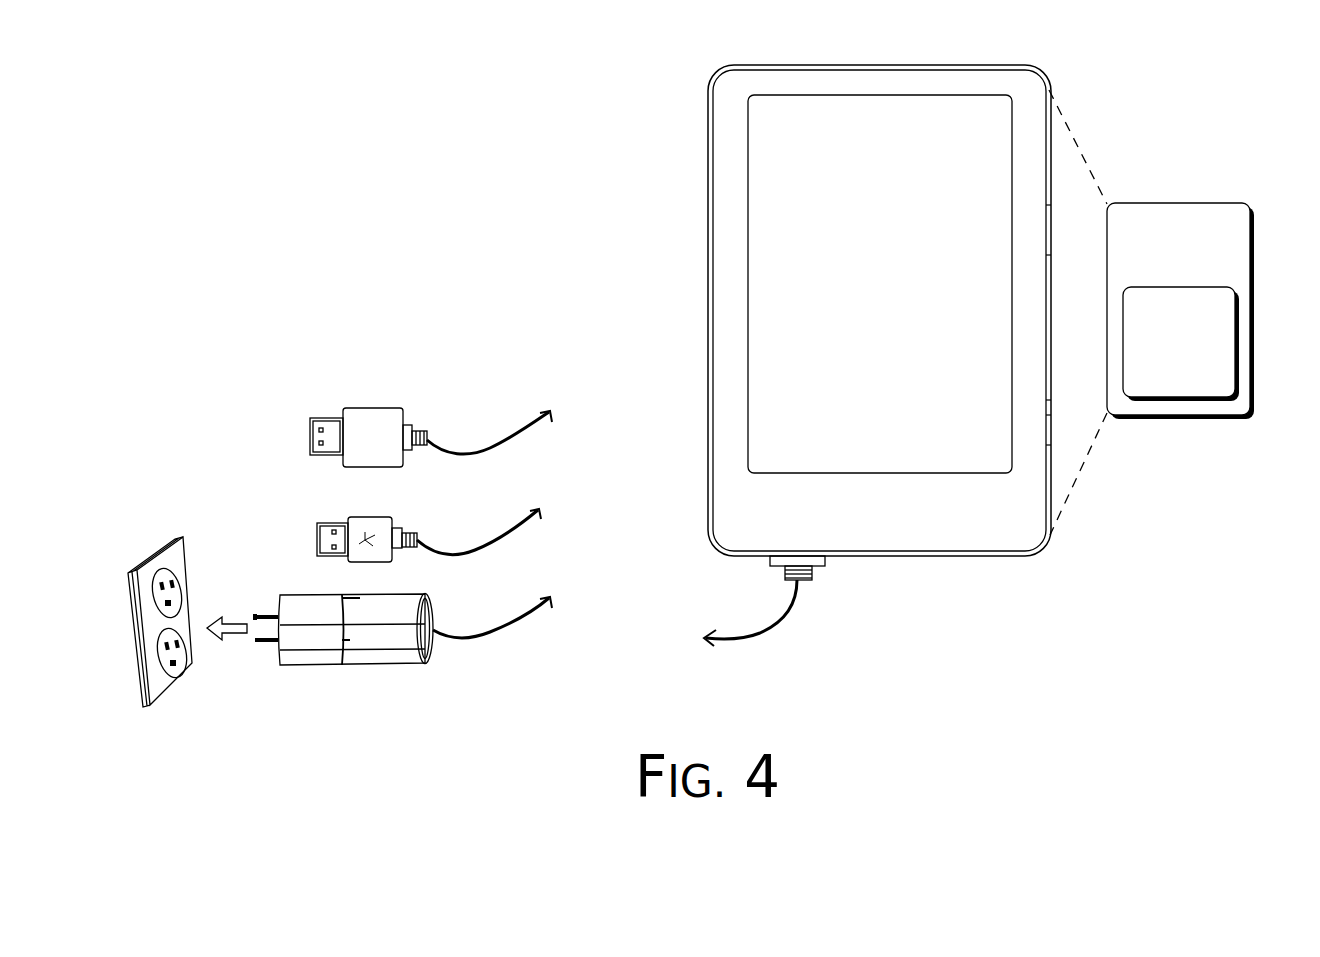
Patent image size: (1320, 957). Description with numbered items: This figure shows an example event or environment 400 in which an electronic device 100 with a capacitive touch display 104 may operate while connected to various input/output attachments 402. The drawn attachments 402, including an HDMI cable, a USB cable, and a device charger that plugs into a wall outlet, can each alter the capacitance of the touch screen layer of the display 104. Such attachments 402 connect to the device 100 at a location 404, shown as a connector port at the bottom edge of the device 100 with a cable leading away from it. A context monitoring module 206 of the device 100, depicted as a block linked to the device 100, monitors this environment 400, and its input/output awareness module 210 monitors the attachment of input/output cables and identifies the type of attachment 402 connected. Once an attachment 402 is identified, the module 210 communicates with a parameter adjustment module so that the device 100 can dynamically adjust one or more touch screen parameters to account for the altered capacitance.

The electronic device 100 is at (850, 298).
The display 104 is at (750, 250).
The context monitoring module 206 is at (1180, 311).
The input/output awareness module 210 is at (1181, 344).
The environment 400 is at (1219, 59).
The input/output attachment 402 is at (236, 383).
The location 404 is at (825, 566).